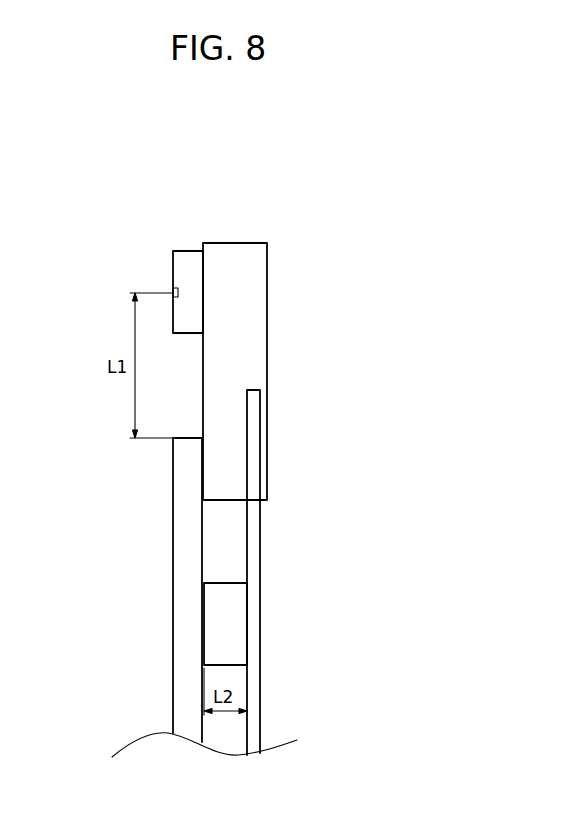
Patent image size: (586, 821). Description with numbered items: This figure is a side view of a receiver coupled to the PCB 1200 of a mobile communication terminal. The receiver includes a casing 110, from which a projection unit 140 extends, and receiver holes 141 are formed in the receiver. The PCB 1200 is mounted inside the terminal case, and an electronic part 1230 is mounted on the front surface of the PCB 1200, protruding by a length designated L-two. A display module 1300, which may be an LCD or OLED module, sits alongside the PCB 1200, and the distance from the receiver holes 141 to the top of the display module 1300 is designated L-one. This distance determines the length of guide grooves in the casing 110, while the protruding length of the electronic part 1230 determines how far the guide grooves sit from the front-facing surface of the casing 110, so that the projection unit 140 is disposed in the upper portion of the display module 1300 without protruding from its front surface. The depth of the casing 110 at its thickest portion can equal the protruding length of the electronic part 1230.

The casing 110 is at (245, 351).
The projection unit 140 is at (191, 260).
The receiver holes 141 is at (173, 292).
The PCB 1200 is at (261, 571).
The electronic part 1230 is at (228, 639).
The display module 1300 is at (190, 605).